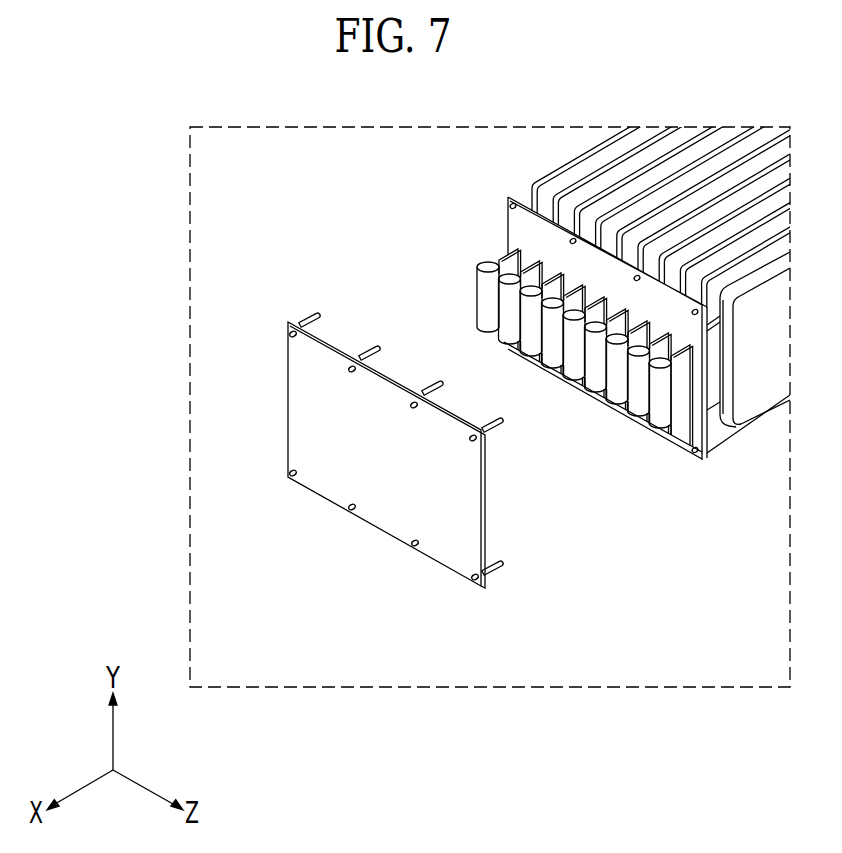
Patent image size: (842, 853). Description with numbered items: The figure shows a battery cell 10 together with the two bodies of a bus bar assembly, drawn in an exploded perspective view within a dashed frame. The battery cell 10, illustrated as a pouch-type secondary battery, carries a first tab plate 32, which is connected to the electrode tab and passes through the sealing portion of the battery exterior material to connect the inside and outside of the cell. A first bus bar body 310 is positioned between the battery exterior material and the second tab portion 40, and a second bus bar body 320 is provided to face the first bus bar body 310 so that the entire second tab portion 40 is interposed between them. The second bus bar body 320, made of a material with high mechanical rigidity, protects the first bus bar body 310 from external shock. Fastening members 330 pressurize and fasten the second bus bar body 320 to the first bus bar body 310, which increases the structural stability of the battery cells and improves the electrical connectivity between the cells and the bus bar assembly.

The battery cell 10 is at (750, 404).
The first tab plate 32 is at (681, 388).
The second tab portion 40 is at (659, 426).
The first bus bar body 310 is at (508, 216).
The second bus bar body 320 is at (288, 407).
The fastening member 330 is at (312, 322).